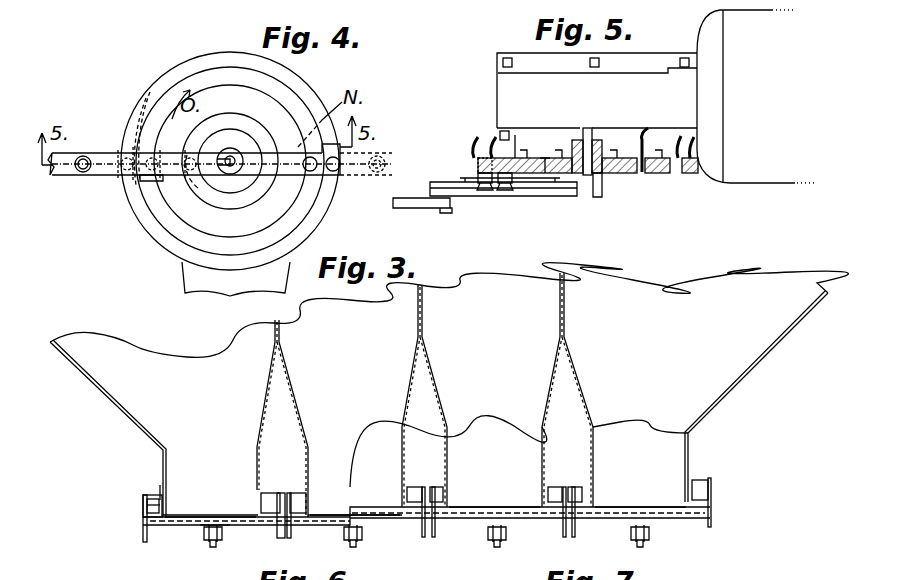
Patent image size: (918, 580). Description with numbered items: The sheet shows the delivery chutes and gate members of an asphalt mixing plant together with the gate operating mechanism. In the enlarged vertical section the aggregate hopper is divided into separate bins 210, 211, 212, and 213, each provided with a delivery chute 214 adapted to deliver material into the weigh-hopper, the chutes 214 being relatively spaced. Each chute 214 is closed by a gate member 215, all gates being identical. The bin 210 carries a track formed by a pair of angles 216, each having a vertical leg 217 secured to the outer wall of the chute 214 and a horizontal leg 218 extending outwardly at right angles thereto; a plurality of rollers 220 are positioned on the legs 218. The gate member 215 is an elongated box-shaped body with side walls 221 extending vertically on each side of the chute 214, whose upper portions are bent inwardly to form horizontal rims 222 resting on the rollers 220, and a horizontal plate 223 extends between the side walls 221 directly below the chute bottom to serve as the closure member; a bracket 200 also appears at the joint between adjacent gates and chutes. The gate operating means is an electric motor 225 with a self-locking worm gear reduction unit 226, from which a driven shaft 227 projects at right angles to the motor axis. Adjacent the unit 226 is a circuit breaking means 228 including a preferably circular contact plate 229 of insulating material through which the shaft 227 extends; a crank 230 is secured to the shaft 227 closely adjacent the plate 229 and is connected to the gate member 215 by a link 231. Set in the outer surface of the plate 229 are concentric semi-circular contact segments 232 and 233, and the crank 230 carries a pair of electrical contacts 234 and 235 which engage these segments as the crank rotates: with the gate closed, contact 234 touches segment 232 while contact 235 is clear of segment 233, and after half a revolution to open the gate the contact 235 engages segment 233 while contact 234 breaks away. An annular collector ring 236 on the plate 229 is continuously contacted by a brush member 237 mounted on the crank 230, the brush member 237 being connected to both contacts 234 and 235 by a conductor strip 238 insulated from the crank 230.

In FIG. 3, the bracket 200 is at (263, 504).
In FIG. 3, the bin 210 is at (215, 396).
In FIG. 3, the bin 211 is at (370, 366).
In FIG. 3, the bin 212 is at (505, 361).
In FIG. 3, the bin 213 is at (691, 344).
In FIG. 3, the delivery chute 214 is at (238, 496).
In FIG. 3, the gate member 215 is at (172, 538).
In FIG. 3, the angle 216 is at (159, 483).
In FIG. 3, the vertical leg 217 is at (262, 495).
In FIG. 3, the horizontal leg 218 is at (148, 532).
In FIG. 3, the roller 220 is at (145, 504).
In FIG. 3, the side wall 221 is at (150, 522).
In FIG. 5, the horizontal rim 222 is at (583, 131).
In FIG. 3, the horizontal rim 222 is at (152, 495).
In FIG. 3, the horizontal plate 223 is at (212, 530).
In FIG. 5, the electric motor 225 is at (790, 112).
In FIG. 5, the gear reduction unit 226 is at (500, 93).
In FIG. 5, the driven shaft 227 is at (596, 140).
In FIG. 5, the circuit breaking means 228 is at (619, 192).
In FIG. 5, the contact plate 229 is at (645, 172).
In FIG. 4, the crank 230 is at (106, 173).
In FIG. 5, the crank 230 is at (525, 196).
In FIG. 4, the link 231 is at (80, 160).
In FIG. 5, the link 231 is at (418, 200).
In FIG. 3, the link 231 is at (272, 522).
In FIG. 4, the contact segment 232 is at (142, 108).
In FIG. 5, the contact segment 232 is at (480, 165).
In FIG. 4, the contact segment 233 is at (185, 228).
In FIG. 5, the contact segment 233 is at (672, 176).
In FIG. 4, the electrical contact 234 is at (140, 96).
In FIG. 5, the electrical contact 234 is at (485, 185).
In FIG. 4, the electrical contact 235 is at (176, 156).
In FIG. 5, the electrical contact 235 is at (505, 185).
In FIG. 4, the annular collector ring 236 is at (250, 126).
In FIG. 5, the annular collector ring 236 is at (547, 170).
In FIG. 4, the brush member 237 is at (192, 190).
In FIG. 5, the conductor strip 238 is at (545, 192).